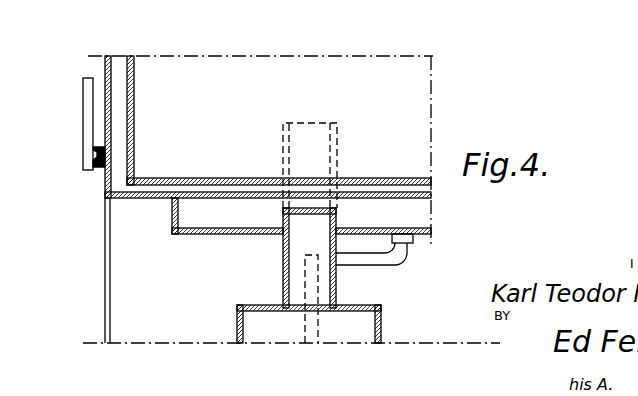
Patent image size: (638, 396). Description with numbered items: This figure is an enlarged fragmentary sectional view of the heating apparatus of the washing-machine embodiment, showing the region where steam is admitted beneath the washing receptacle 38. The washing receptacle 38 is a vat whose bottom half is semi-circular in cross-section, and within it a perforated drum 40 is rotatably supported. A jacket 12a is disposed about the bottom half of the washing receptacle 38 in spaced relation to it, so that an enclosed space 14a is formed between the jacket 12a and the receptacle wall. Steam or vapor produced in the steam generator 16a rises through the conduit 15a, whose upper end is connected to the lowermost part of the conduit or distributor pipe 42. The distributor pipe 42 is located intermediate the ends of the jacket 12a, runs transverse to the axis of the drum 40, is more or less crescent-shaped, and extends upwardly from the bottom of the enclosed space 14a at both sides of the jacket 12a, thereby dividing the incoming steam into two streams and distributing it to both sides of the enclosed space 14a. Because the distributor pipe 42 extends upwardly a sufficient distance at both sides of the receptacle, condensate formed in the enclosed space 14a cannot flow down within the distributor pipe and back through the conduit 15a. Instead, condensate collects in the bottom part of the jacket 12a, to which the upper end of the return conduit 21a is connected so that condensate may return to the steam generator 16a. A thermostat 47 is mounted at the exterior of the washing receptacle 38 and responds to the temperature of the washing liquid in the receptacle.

The washing receptacle 38 is at (105, 67).
The perforated drum 40 is at (134, 101).
The thermostat 47 is at (83, 108).
The enclosed space 14a is at (188, 213).
The jacket 12a is at (208, 234).
The conduit 15a is at (283, 266).
The distributor pipe 42 is at (337, 222).
The return condensate conduit 21a is at (408, 258).
The steam generator 16a is at (392, 318).